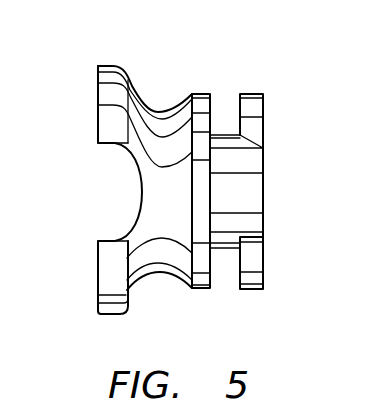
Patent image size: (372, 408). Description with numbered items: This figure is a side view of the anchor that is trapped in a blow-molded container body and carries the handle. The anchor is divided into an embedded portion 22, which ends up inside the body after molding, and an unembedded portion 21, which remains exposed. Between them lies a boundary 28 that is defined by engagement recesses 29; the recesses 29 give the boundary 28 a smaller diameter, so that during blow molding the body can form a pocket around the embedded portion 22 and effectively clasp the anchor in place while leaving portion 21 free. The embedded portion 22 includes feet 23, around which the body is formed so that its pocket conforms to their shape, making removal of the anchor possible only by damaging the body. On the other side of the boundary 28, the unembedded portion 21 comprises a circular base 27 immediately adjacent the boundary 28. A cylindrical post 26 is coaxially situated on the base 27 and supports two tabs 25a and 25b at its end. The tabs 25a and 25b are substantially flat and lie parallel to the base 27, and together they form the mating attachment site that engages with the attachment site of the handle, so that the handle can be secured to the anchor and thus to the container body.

The unembedded portion 21 is at (262, 60).
The embedded portion 22 is at (165, 60).
The feet 23 is at (97, 315).
The tab 25a is at (264, 102).
The tab 25b is at (264, 260).
The cylindrical post 26 is at (214, 249).
The circular base 27 is at (197, 289).
The boundary 28 is at (172, 95).
The engagement recesses 29 is at (162, 273).